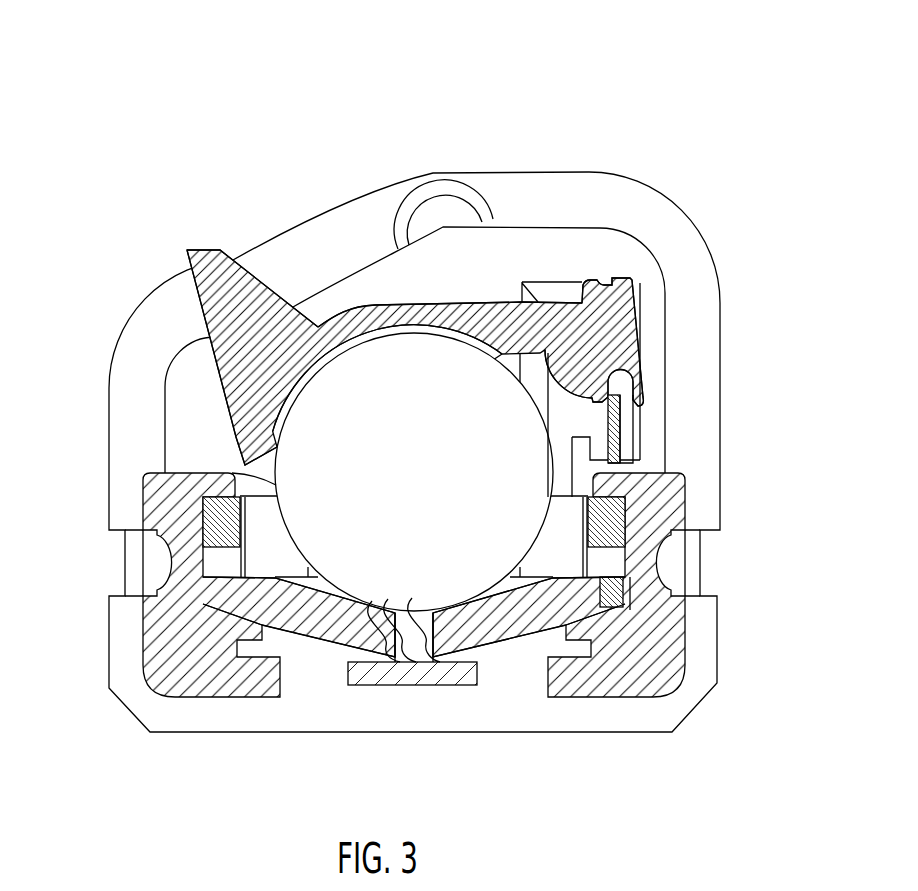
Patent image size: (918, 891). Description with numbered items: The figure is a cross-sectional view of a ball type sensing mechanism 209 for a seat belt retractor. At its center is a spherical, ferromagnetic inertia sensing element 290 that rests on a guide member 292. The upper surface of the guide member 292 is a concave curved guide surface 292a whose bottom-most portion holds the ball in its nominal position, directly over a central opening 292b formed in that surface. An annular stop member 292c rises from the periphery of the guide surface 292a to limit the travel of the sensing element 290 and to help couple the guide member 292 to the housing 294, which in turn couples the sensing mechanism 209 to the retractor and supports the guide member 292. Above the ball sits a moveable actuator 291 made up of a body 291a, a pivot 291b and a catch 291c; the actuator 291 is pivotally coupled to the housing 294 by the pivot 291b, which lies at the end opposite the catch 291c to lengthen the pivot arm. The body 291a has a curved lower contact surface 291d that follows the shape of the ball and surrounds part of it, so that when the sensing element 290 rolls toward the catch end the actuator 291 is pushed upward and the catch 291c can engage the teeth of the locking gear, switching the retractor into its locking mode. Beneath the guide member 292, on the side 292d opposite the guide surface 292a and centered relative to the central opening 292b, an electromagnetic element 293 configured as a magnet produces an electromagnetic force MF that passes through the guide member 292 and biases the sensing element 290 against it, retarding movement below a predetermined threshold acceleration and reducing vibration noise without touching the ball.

The sensing mechanism 209 is at (431, 415).
The inertia sensing element 290 is at (500, 466).
The moveable actuator 291 is at (416, 308).
The body 291a is at (358, 325).
The pivot 291b is at (590, 350).
The catch 291c is at (202, 262).
The contact surface 291d is at (357, 335).
The guide member 292 is at (357, 572).
The guide surface 292a is at (322, 586).
The central opening 292b is at (426, 596).
The stop member 292c is at (207, 518).
The side of guide member 292d is at (488, 652).
The electromagnetic element 293 is at (366, 688).
The housing 294 is at (712, 482).
The electromagnetic force MF is at (405, 662).